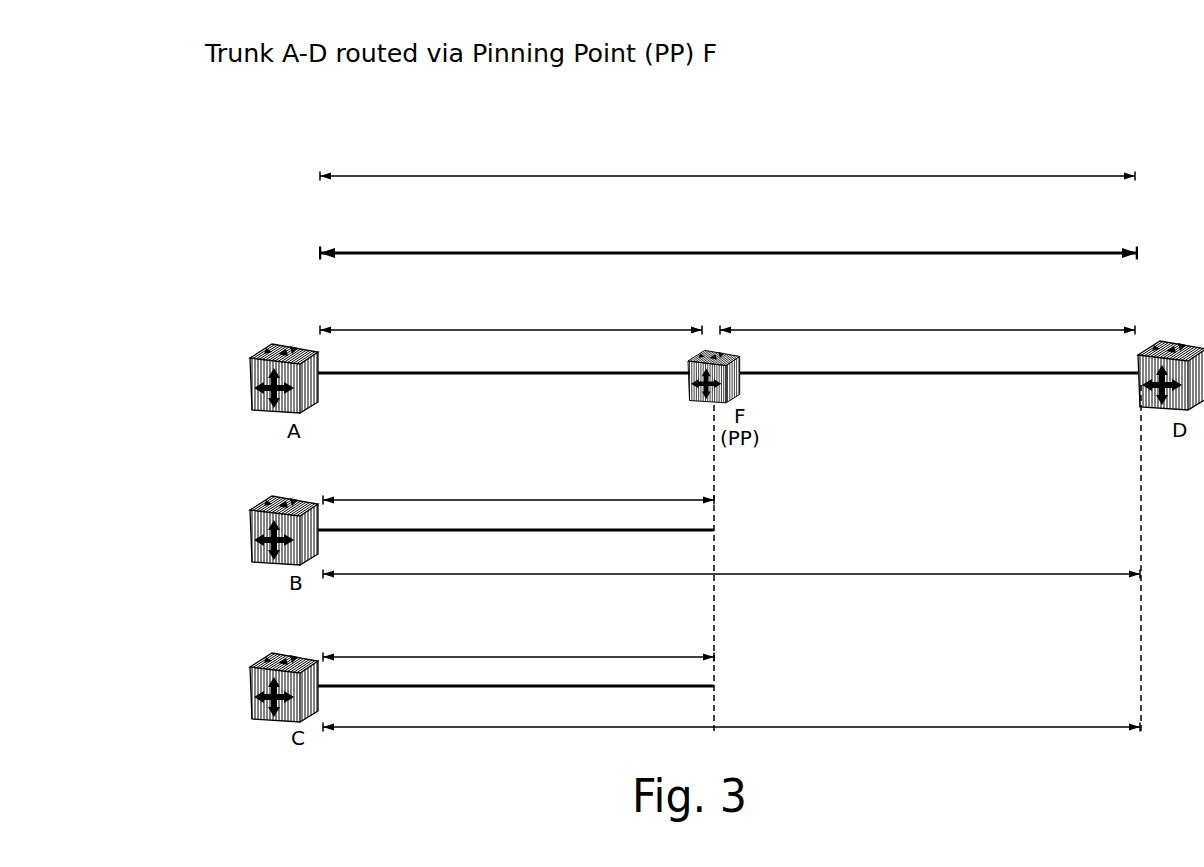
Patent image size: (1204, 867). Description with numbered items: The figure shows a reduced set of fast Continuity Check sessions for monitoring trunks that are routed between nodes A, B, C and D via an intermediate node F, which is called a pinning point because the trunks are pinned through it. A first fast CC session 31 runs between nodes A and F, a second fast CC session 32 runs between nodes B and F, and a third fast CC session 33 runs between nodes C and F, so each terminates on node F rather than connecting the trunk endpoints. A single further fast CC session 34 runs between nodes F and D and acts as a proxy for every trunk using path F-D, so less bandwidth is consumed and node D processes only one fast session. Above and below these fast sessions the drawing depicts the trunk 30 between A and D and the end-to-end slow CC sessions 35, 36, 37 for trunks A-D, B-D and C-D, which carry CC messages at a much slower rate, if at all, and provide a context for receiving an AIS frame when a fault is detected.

The trunk 30 is at (728, 229).
The first fast CC session 31 is at (511, 307).
The second fast CC session 32 is at (518, 478).
The third fast CC session 33 is at (518, 635).
The fast CC session 34 is at (927, 305).
The slow CC session between node A and node D 35 is at (727, 153).
The slow CC session between node B and node D 36 is at (731, 551).
The slow CC session between node C and node D 37 is at (731, 704).